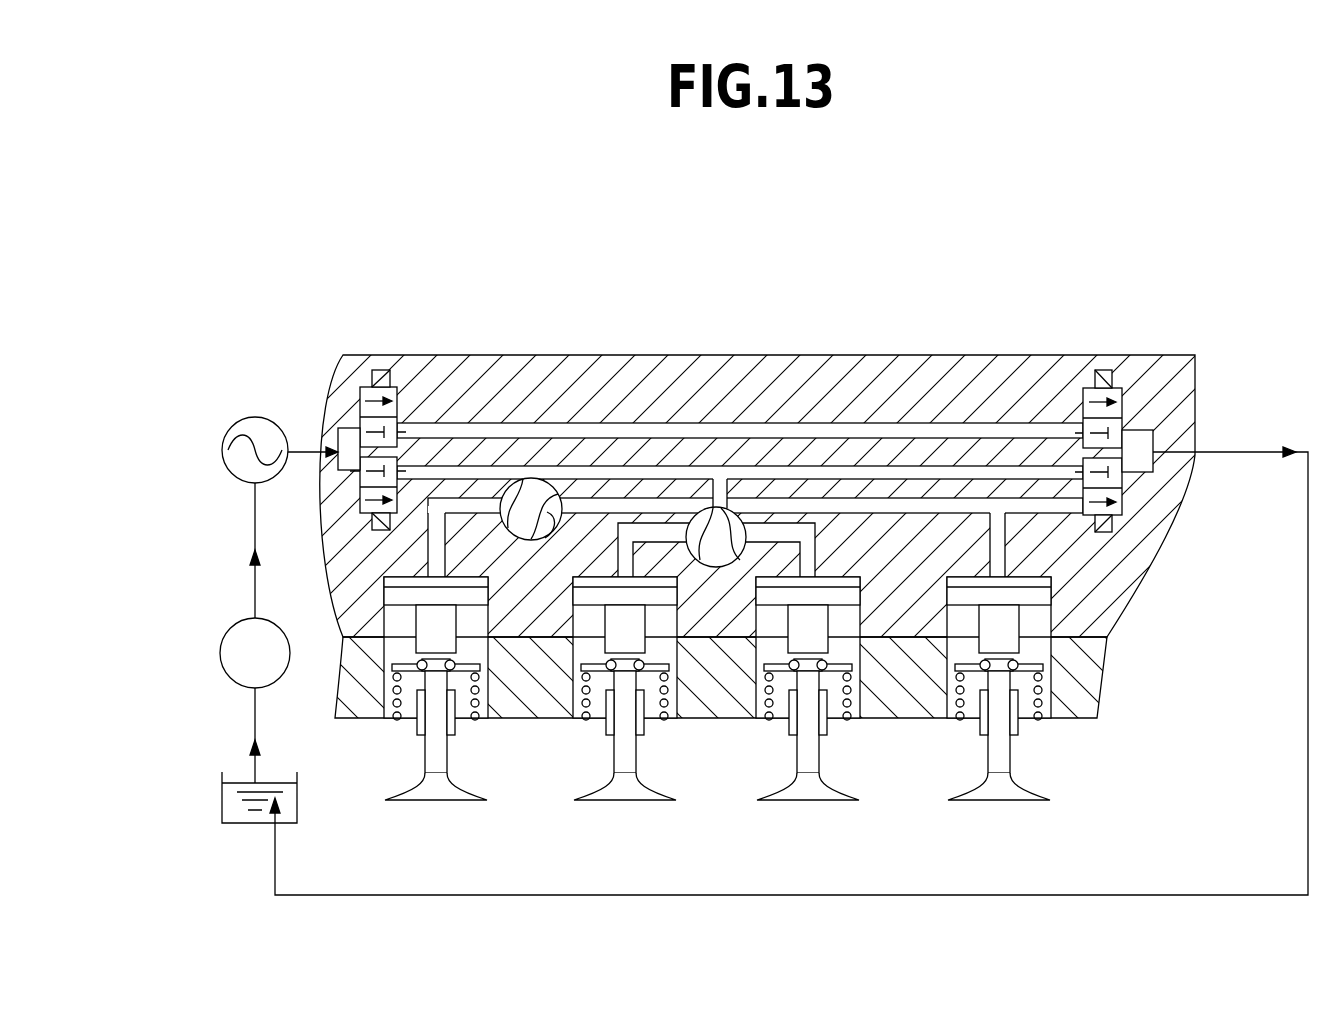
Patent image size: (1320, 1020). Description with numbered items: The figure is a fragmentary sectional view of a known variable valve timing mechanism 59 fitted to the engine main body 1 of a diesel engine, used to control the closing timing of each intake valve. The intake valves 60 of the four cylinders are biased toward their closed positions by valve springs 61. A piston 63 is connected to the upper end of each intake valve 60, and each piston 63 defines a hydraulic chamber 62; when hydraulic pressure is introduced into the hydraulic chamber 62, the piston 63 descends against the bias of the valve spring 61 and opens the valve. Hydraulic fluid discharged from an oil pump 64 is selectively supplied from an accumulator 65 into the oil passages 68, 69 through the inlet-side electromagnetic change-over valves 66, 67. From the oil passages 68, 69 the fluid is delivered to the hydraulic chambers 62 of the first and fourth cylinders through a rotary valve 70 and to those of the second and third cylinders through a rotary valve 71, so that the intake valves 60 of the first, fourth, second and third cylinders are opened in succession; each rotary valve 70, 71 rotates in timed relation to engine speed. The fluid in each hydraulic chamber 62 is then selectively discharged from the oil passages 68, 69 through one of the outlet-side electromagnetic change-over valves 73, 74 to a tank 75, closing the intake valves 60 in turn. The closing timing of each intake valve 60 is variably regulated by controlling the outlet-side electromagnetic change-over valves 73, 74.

The engine main body 1 is at (690, 347).
The variable valve timing mechanism 59 is at (1140, 352).
The intake valve 60 is at (462, 792).
The valve spring 61 is at (1053, 695).
The hydraulic chamber 62 is at (1049, 579).
The piston 63 is at (1082, 641).
The oil pump 64 is at (281, 630).
The accumulator 65 is at (258, 416).
The inlet-side electromagnetic change-over valve 66 is at (383, 371).
The inlet-side electromagnetic change-over valve 67 is at (333, 515).
The oil passage 68 is at (893, 432).
The oil passage 69 is at (833, 499).
The rotary valve 70 is at (543, 478).
The rotary valve 71 is at (736, 511).
The outlet-side electromagnetic change-over valve 73 is at (1086, 371).
The outlet-side electromagnetic change-over valve 74 is at (1123, 505).
The tank 75 is at (233, 825).